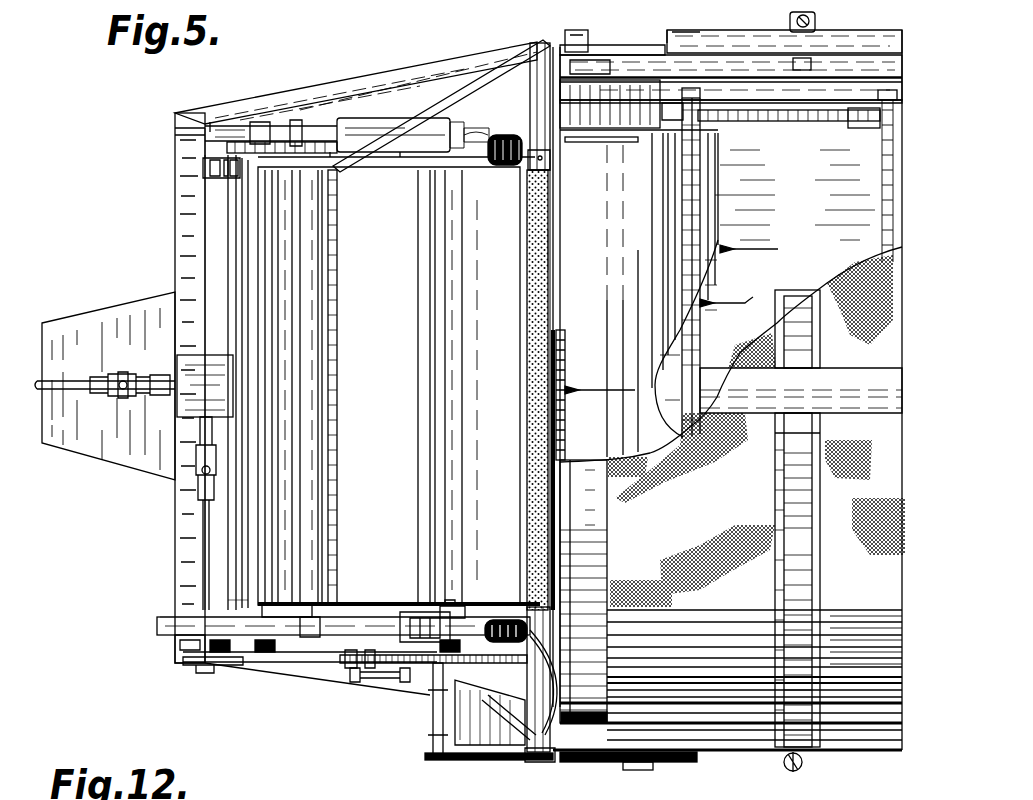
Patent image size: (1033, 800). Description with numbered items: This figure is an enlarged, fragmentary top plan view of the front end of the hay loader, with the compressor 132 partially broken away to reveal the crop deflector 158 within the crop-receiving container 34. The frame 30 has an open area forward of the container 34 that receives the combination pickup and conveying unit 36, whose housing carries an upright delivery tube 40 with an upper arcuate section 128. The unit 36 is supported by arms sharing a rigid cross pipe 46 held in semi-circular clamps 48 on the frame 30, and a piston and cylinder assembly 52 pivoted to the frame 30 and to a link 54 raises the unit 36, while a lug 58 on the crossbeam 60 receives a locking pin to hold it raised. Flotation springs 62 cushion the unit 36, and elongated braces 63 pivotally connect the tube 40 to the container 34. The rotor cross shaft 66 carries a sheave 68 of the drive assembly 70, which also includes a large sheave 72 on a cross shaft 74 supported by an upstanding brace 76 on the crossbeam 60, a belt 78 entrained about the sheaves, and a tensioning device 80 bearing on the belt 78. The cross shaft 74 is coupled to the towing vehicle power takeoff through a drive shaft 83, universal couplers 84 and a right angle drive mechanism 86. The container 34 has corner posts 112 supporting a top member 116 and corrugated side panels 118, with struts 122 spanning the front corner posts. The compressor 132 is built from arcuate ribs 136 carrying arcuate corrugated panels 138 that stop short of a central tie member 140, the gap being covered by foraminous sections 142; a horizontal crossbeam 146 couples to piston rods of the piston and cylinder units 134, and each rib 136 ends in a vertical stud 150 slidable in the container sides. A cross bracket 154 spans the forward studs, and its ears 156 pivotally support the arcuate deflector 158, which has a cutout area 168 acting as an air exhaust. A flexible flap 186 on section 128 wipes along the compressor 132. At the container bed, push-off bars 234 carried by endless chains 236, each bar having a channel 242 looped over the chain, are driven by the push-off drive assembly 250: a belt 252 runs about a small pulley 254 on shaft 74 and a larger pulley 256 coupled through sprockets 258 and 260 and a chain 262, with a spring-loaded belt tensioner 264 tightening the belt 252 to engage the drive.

The frame 30 is at (356, 73).
The crop-receiving container 34 is at (712, 34).
The combination pickup and conveying unit 36 is at (251, 532).
The upright delivery tube 40 is at (368, 342).
The cross pipe 46 is at (230, 247).
The semi-circular clamps 48 is at (233, 176).
The piston and cylinder assembly 52 is at (386, 160).
The link 54 is at (248, 132).
The lug 58 is at (178, 137).
The crossbeam 60 is at (180, 242).
The flotation springs 62 is at (505, 166).
The braces 63 is at (437, 108).
The cross shaft 66 is at (420, 640).
The sheave 68 is at (450, 608).
The drive assembly 70 is at (158, 627).
The large sheave 72 is at (168, 616).
The cross shaft 74 is at (204, 520).
The upstanding brace 76 is at (177, 652).
The belt 78 is at (272, 612).
The tensioning device 80 is at (308, 630).
The drive shaft 83 is at (70, 380).
The universal couplers 84 is at (197, 452).
The right angle drive mechanism 86 is at (187, 368).
The corner posts 112 is at (557, 36).
The top member 116 is at (903, 42).
The corrugated side panels 118 is at (628, 54).
The struts 122 is at (520, 172).
The arcuate section 128 is at (520, 324).
The compressor 132 is at (868, 708).
The piston and cylinder units 134 is at (814, 25).
The arcuate ribs 136 is at (590, 505).
The arcuate corrugated panels 138 is at (722, 82).
The central tie member 140 is at (844, 380).
The foraminous sections 142 is at (858, 594).
The horizontal crossbeam 146 is at (785, 520).
The vertical stud 150 is at (612, 60).
The cross bracket 154 is at (554, 438).
The ears 156 is at (568, 380).
The arcuate deflector 158 is at (686, 268).
The cutout area 168 is at (736, 289).
The flap 186 is at (546, 254).
The bars 234 is at (886, 200).
The endless chains 236 is at (769, 122).
The channel 242 is at (858, 128).
The push-off drive assembly 250 is at (345, 680).
The belt 252 is at (297, 664).
The small pulley 254 is at (192, 670).
The larger pulley 256 is at (473, 661).
The sprocket 258 is at (428, 758).
The sprocket 260 is at (654, 771).
The chain 262 is at (598, 762).
The spring-loaded belt tensioner 264 is at (394, 684).